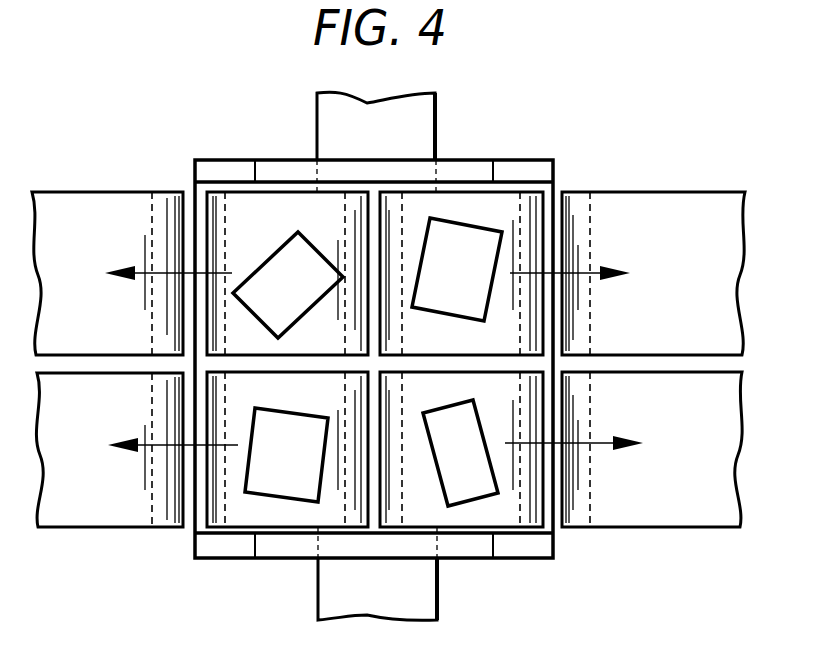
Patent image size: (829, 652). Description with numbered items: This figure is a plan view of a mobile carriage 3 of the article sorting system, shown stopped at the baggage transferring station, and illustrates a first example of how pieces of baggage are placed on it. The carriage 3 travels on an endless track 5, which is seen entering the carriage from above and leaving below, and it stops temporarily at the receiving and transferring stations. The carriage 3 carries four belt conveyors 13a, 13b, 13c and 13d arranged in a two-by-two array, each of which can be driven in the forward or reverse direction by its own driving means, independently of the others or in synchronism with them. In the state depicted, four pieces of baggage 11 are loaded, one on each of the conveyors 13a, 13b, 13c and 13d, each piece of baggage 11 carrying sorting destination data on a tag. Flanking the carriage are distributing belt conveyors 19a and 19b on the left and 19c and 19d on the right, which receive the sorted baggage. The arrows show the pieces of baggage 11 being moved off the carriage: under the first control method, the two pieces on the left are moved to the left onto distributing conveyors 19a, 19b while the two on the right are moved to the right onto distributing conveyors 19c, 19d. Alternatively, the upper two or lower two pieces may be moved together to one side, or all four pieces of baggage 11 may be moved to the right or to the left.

The mobile carriage 3 is at (286, 160).
The track 5 is at (437, 118).
The piece of baggage 11 is at (303, 295).
The belt conveyor 13a is at (233, 192).
The belt conveyor 13b is at (243, 527).
The belt conveyor 13c is at (507, 192).
The belt conveyor 13d is at (463, 527).
The distributing belt conveyor 19a is at (80, 192).
The distributing belt conveyor 19b is at (80, 527).
The distributing belt conveyor 19c is at (655, 192).
The distributing belt conveyor 19d is at (653, 527).